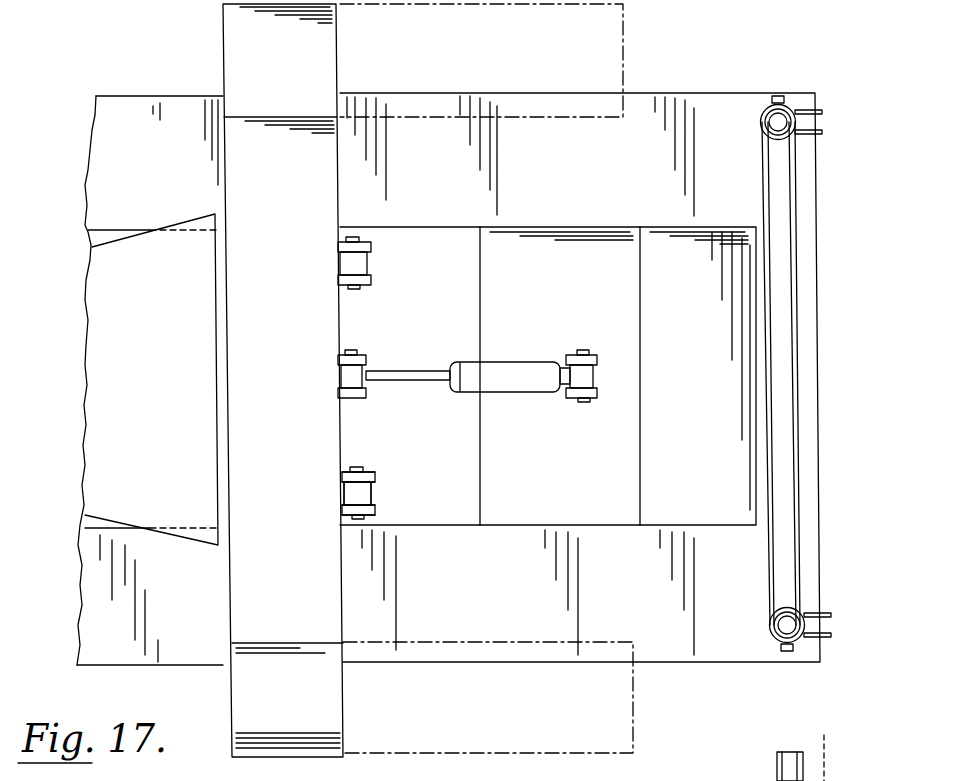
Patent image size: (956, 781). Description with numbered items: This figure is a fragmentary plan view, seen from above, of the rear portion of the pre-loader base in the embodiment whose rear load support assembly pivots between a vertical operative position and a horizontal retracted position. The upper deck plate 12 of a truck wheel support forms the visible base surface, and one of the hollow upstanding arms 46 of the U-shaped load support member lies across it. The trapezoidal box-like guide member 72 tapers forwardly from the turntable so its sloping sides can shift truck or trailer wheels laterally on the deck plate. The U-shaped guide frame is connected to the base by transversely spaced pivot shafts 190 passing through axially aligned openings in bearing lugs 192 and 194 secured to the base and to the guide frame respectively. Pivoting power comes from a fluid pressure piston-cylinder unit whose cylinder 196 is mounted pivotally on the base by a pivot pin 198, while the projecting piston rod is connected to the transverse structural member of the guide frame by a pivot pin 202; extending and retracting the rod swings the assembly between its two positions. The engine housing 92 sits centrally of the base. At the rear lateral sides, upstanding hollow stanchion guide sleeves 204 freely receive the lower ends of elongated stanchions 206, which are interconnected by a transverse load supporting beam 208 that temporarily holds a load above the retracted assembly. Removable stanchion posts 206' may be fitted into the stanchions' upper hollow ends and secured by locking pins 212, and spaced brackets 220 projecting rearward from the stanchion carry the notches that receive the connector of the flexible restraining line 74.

The upper deck plate 12 is at (132, 107).
The upstanding arm 46 is at (224, 50).
The box-like guide member 72 is at (105, 277).
The flexible restraining line 74 is at (828, 779).
The housing 92 is at (652, 312).
The pivot shaft 190 is at (350, 240).
The bearing lug 192 is at (342, 510).
The bearing lug 194 is at (371, 490).
The cylinder 196 is at (508, 372).
The pivot pin 198 is at (584, 401).
The pivot pin 202 is at (350, 355).
The stanchion guide sleeve 204 is at (771, 105).
The stanchion 206 is at (751, 371).
The removable stanchion post 206' is at (748, 373).
The transverse load supporting beam 208 is at (770, 390).
The locking pin 212 is at (783, 97).
The bracket 220 is at (824, 114).